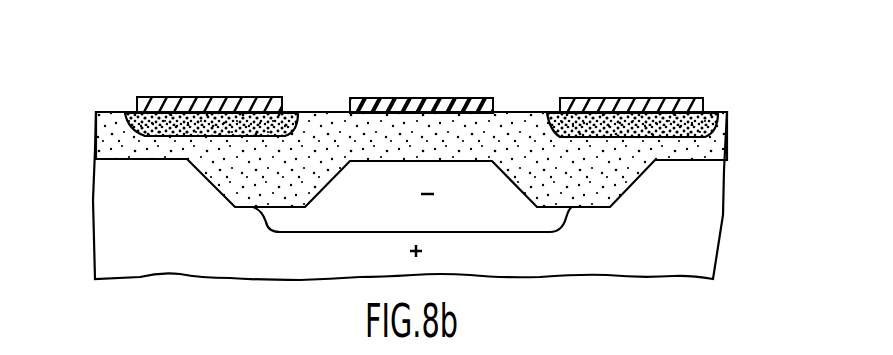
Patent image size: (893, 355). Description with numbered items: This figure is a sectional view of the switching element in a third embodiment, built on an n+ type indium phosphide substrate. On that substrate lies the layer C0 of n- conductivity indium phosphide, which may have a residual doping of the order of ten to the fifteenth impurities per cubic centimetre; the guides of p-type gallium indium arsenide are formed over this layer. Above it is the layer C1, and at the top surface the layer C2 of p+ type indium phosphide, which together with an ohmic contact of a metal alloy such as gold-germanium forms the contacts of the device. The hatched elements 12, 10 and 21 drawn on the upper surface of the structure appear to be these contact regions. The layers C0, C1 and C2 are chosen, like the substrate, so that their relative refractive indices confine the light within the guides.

The first electrode 12 is at (210, 98).
The center electrode 10 is at (433, 98).
The second electrode 21 is at (626, 98).
The p+ type indium phosphide layer C2 is at (735, 79).
The layer C1 is at (703, 150).
The n- type indium phosphide layer C0 is at (538, 219).